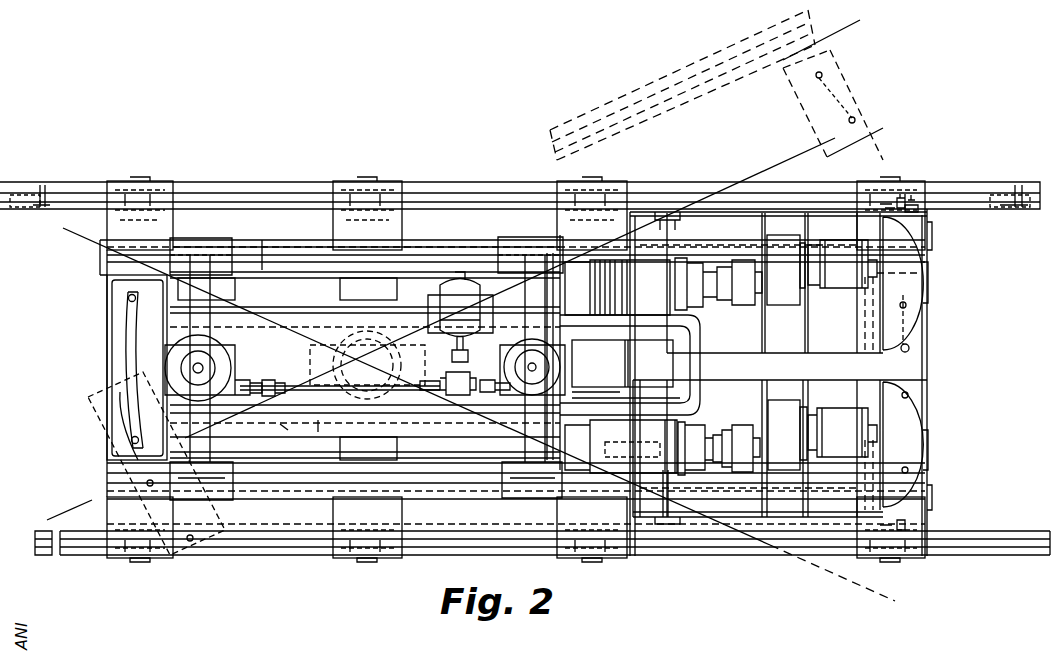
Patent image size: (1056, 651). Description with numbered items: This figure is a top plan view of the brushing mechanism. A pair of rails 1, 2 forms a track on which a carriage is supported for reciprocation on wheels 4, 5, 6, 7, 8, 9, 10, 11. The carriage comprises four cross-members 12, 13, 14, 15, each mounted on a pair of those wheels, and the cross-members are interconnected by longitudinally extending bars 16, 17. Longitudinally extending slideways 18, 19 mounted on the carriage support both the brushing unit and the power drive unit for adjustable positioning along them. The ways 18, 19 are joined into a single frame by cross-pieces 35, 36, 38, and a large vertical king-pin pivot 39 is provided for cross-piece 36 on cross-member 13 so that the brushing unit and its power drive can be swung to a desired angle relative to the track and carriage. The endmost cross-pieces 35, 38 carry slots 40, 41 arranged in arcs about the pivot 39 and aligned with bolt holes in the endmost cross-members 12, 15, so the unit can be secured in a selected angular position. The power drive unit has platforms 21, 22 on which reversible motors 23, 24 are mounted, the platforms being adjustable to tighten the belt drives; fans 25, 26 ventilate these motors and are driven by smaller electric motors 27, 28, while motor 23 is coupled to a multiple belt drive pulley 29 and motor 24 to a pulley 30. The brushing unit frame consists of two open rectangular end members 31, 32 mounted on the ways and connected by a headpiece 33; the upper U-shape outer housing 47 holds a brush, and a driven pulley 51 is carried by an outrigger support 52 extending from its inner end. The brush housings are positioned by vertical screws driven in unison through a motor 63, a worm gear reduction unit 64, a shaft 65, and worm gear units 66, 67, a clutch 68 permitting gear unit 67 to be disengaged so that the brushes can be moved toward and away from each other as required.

The rail 1 is at (1007, 183).
The rail 2 is at (980, 555).
The wheel 4 is at (118, 557).
The wheel 5 is at (345, 555).
The wheel 6 is at (616, 555).
The wheel 7 is at (915, 557).
The wheel 8 is at (162, 186).
The wheel 9 is at (393, 188).
The wheel 10 is at (630, 186).
The wheel 11 is at (912, 178).
The cross-member 12 is at (115, 230).
The cross-member 13 is at (345, 228).
The cross-member 14 is at (565, 222).
The cross-member 15 is at (912, 196).
The longitudinally extending bar 16 is at (930, 231).
The longitudinally extending bar 17 is at (931, 502).
The slideway 18 is at (640, 95).
The slideway 19 is at (295, 500).
The platform 21 is at (733, 505).
The platform 22 is at (725, 222).
The reversible motor 23 is at (910, 418).
The reversible motor 24 is at (925, 283).
The fan 25 is at (742, 437).
The fan 26 is at (740, 272).
The electric motor 27 is at (842, 432).
The electric motor 28 is at (842, 264).
The multiple belt drive pulley 29 is at (664, 490).
The pulley 30 is at (653, 263).
The end member 31 is at (215, 485).
The end member 32 is at (512, 380).
The headpiece 33 is at (318, 430).
The cross-piece 35 is at (110, 305).
The cross-piece 36 is at (398, 447).
The cross-piece 38 is at (925, 335).
The king-pin pivot 39 is at (325, 362).
The slot 40 is at (120, 433).
The slot 41 is at (905, 349).
The outer housing 47 is at (293, 432).
The driven pulley 51 is at (663, 358).
The outrigger support 52 is at (692, 405).
The motor 63 is at (457, 278).
The worm gear reduction unit 64 is at (458, 398).
The shaft 65 is at (312, 388).
The worm gear unit 66 is at (530, 372).
The worm gear unit 67 is at (170, 363).
The clutch 68 is at (258, 378).